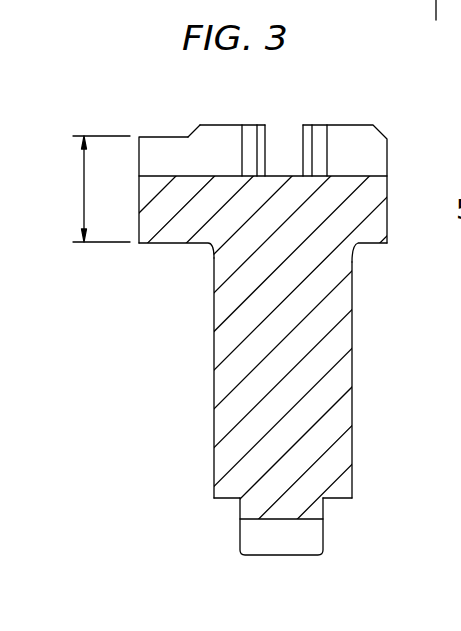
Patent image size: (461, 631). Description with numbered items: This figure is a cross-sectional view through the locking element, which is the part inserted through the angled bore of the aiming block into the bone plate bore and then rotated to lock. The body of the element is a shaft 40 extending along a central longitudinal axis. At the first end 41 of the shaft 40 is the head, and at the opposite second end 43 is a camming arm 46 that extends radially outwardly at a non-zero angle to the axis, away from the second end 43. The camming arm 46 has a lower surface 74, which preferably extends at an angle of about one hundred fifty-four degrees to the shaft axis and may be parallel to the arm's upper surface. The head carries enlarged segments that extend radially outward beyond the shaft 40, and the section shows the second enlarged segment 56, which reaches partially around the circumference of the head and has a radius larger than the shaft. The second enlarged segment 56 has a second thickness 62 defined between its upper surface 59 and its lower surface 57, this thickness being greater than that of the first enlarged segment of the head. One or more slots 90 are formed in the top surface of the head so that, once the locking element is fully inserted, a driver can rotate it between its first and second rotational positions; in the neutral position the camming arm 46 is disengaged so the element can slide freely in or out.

The shaft 40 is at (215, 364).
The first end 41 is at (353, 268).
The second end 43 is at (352, 497).
The camming arm 46 is at (252, 557).
The second enlarged segment 56 is at (153, 146).
The lower surface 57 is at (173, 245).
The upper surface 59 is at (167, 136).
The second thickness 62 is at (84, 165).
The lower surface 74 is at (283, 542).
The slots 90 is at (285, 127).